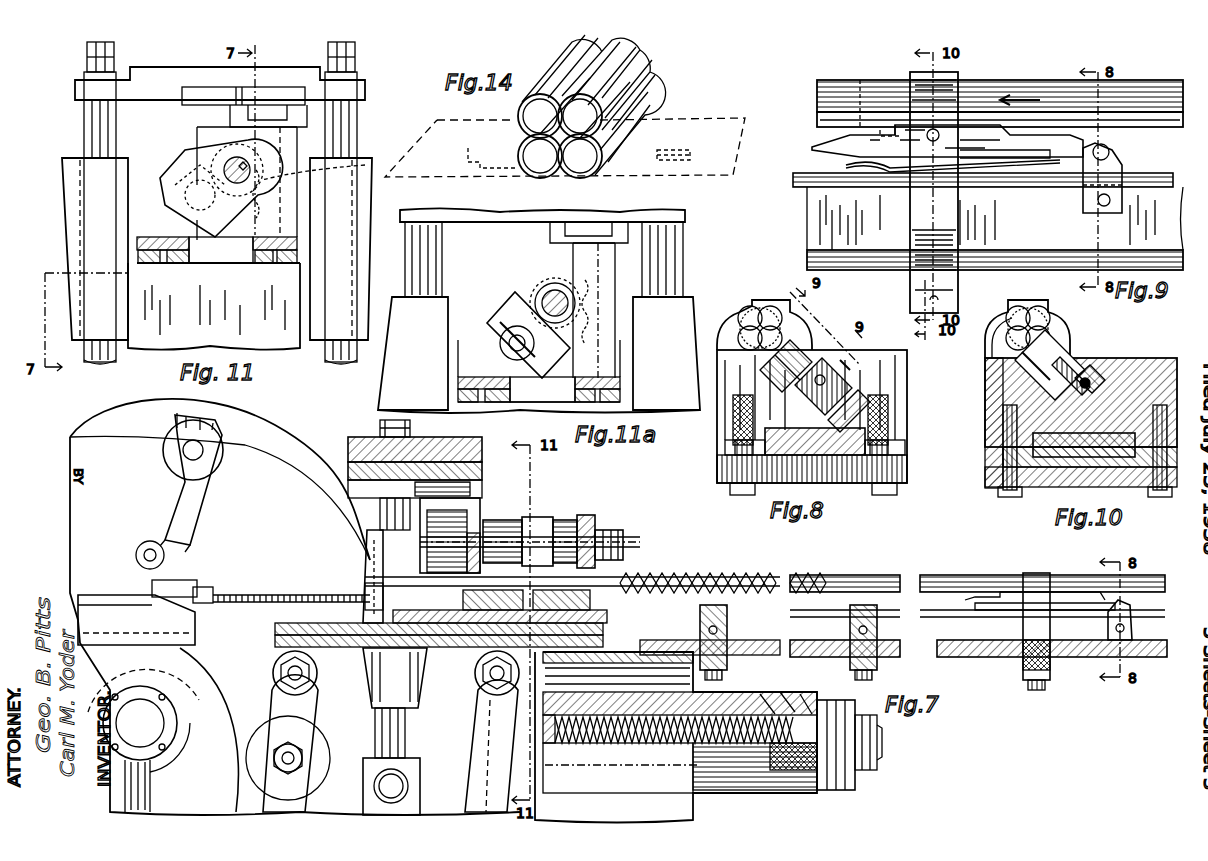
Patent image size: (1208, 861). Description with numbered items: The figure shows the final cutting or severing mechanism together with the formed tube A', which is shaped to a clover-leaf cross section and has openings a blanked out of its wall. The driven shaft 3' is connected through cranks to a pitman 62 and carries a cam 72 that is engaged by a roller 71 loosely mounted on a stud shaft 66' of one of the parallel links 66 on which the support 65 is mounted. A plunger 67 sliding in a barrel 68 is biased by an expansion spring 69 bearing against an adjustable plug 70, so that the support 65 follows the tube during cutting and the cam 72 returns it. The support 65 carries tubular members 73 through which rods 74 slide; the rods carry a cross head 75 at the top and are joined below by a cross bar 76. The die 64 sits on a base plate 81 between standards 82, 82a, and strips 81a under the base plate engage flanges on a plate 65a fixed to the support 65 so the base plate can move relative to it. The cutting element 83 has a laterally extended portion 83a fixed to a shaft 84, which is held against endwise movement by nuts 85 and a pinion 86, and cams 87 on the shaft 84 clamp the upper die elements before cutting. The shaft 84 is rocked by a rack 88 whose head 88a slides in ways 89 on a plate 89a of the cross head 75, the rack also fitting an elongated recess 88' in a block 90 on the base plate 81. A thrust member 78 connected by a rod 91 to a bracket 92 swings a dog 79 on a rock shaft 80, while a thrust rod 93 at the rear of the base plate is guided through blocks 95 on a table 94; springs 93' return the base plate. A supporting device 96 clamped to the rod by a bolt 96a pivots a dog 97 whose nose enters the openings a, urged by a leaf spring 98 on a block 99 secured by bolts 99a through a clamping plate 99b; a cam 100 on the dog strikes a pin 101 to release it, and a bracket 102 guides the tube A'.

In FIG. 7, the shaft 3' is at (180, 752).
In FIG. 7, the pitman 62 is at (150, 788).
In FIG. 11A, the die 64 is at (512, 315).
In FIG. 7, the die 64 is at (540, 517).
In FIG. 11, the support 65 is at (150, 342).
In FIG. 7, the support 65 is at (440, 688).
In FIG. 11, the plate 65a is at (178, 264).
In FIG. 7, the plate 65a is at (262, 628).
In FIG. 7, the parallel links 66 is at (375, 731).
In FIG. 7, the stud shaft 66' is at (301, 758).
In FIG. 7, the plunger 67 is at (725, 712).
In FIG. 7, the barrel 68 is at (730, 792).
In FIG. 7, the expansion spring 69 is at (635, 743).
In FIG. 7, the adjustable plug 70 is at (845, 770).
In FIG. 7, the roller 71 is at (312, 786).
In FIG. 7, the cam 72 is at (205, 693).
In FIG. 11, the tubular members 73 is at (70, 228).
In FIG. 11A, the tubular members 73 is at (392, 362).
In FIG. 8, the tubular members 73 is at (713, 302).
In FIG. 7, the tubular members 73 is at (367, 566).
In FIG. 11, the rods 74 is at (83, 128).
In FIG. 11A, the rods 74 is at (442, 264).
In FIG. 7, the rods 74 is at (380, 506).
In FIG. 11, the cross head 75 is at (290, 72).
In FIG. 11A, the cross head 75 is at (542, 223).
In FIG. 7, the cross head 75 is at (348, 450).
In FIG. 7, the cross bar 76 is at (420, 776).
In FIG. 7, the thrust member 78 is at (194, 588).
In FIG. 7, the dog 79 is at (178, 497).
In FIG. 7, the rock shaft 80 is at (185, 450).
In FIG. 11, the base plate 81 is at (298, 244).
In FIG. 11A, the base plate 81 is at (462, 368).
In FIG. 7, the base plate 81 is at (393, 614).
In FIG. 11, the strips 81a is at (285, 263).
In FIG. 11A, the strips 81a is at (622, 398).
In FIG. 7, the standard 82 is at (463, 600).
In FIG. 7, the standard 82a is at (592, 518).
In FIG. 11, the cutting element 83 is at (192, 156).
In FIG. 11, the laterally extended portion 83a is at (364, 166).
In FIG. 11, the shaft 84 is at (248, 166).
In FIG. 11A, the shaft 84 is at (555, 290).
In FIG. 7, the nuts 85 is at (620, 538).
In FIG. 11, the pinion 86 is at (205, 148).
In FIG. 7, the pinion 86 is at (427, 553).
In FIG. 11A, the cam 87 is at (538, 292).
In FIG. 7, the cam 87 is at (498, 520).
In FIG. 11, the rack 88 is at (270, 183).
In FIG. 11A, the rack 88 is at (600, 310).
In FIG. 11A, the elongated recess 88' is at (612, 310).
In FIG. 11, the head 88a is at (275, 105).
In FIG. 11A, the head 88a is at (600, 228).
In FIG. 11, the ways 89 is at (236, 100).
In FIG. 7, the ways 89 is at (348, 476).
In FIG. 11, the plate 89a is at (188, 88).
In FIG. 7, the plate 89a is at (472, 485).
In FIG. 7, the block 90 is at (370, 552).
In FIG. 7, the rod 91 is at (266, 594).
In FIG. 7, the bracket 92 is at (366, 583).
In FIG. 9, the thrust rod 93 is at (988, 203).
In FIG. 8, the thrust rod 93 is at (832, 411).
In FIG. 10, the thrust rod 93 is at (1110, 357).
In FIG. 7, the springs 93' is at (892, 594).
In FIG. 8, the table 94 is at (815, 455).
In FIG. 7, the table 94 is at (978, 658).
In FIG. 7, the blocks 95 is at (728, 630).
In FIG. 9, the supporting device 96 is at (1086, 200).
In FIG. 8, the supporting device 96 is at (822, 368).
In FIG. 7, the supporting device 96 is at (1132, 630).
In FIG. 8, the bolt 96a is at (858, 362).
In FIG. 9, the dog 97 is at (1052, 162).
In FIG. 8, the dog 97 is at (792, 342).
In FIG. 10, the dog 97 is at (1068, 350).
In FIG. 7, the dog 97 is at (1005, 612).
In FIG. 9, the leaf spring 98 is at (885, 172).
In FIG. 10, the leaf spring 98 is at (1088, 362).
In FIG. 9, the block 99 is at (912, 215).
In FIG. 8, the block 99 is at (898, 382).
In FIG. 10, the block 99 is at (1158, 358).
In FIG. 8, the bolts 99a is at (905, 450).
In FIG. 9, the clamping plate 99b is at (995, 275).
In FIG. 8, the clamping plate 99b is at (908, 470).
In FIG. 10, the clamping plate 99b is at (990, 470).
In FIG. 9, the cam 100 is at (960, 132).
In FIG. 7, the cam 100 is at (1062, 612).
In FIG. 9, the pin 101 is at (900, 130).
In FIG. 8, the pin 101 is at (718, 352).
In FIG. 10, the pin 101 is at (1065, 340).
In FIG. 8, the bracket 102 is at (770, 305).
In FIG. 10, the bracket 102 is at (1006, 318).
In FIG. 14, the openings a is at (620, 73).
In FIG. 9, the openings a is at (873, 80).
In FIG. 14, the tube A' is at (595, 106).
In FIG. 9, the tube A' is at (1000, 93).
In FIG. 8, the tube A' is at (832, 303).
In FIG. 10, the tube A' is at (1074, 303).
In FIG. 7, the tube A' is at (977, 570).